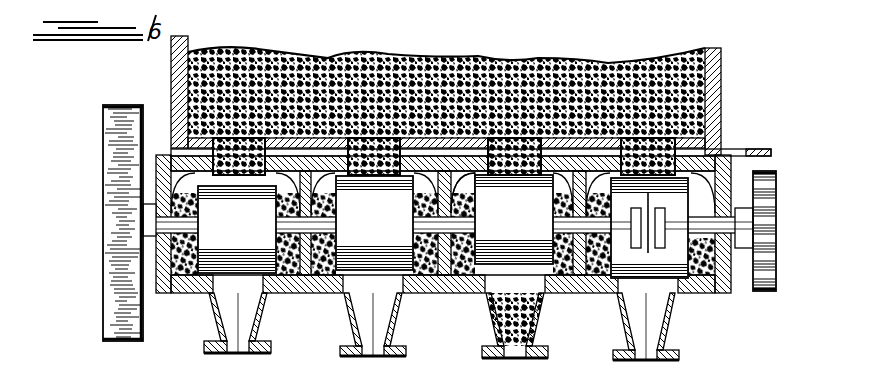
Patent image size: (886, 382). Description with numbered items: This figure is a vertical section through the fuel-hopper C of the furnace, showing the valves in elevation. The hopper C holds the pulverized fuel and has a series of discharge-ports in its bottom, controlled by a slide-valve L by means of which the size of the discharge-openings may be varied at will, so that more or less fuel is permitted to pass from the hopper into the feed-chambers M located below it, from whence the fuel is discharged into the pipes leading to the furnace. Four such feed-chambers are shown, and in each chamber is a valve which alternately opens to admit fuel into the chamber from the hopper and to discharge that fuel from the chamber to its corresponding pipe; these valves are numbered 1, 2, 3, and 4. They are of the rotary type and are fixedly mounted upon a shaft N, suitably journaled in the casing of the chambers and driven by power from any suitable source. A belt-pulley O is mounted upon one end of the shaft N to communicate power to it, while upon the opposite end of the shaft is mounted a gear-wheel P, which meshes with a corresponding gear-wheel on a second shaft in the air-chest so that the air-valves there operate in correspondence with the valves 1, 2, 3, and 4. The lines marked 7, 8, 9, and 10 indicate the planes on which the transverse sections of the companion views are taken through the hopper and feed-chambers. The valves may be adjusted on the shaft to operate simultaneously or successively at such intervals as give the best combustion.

The rotary valve 1 is at (237, 229).
The rotary valve 2 is at (374, 223).
The rotary valve 3 is at (514, 219).
The rotary valve 4 is at (680, 193).
The section line 7 7 is at (244, 33).
The section line 8 8 is at (378, 36).
The section line 9 9 is at (515, 39).
The section line 10 10 is at (651, 27).
The fuel-hopper C is at (713, 80).
The slide-valve L is at (725, 147).
The feed-chambers M is at (154, 135).
The shaft N is at (440, 183).
The belt-pulley O is at (95, 193).
The gear-wheel P is at (769, 185).